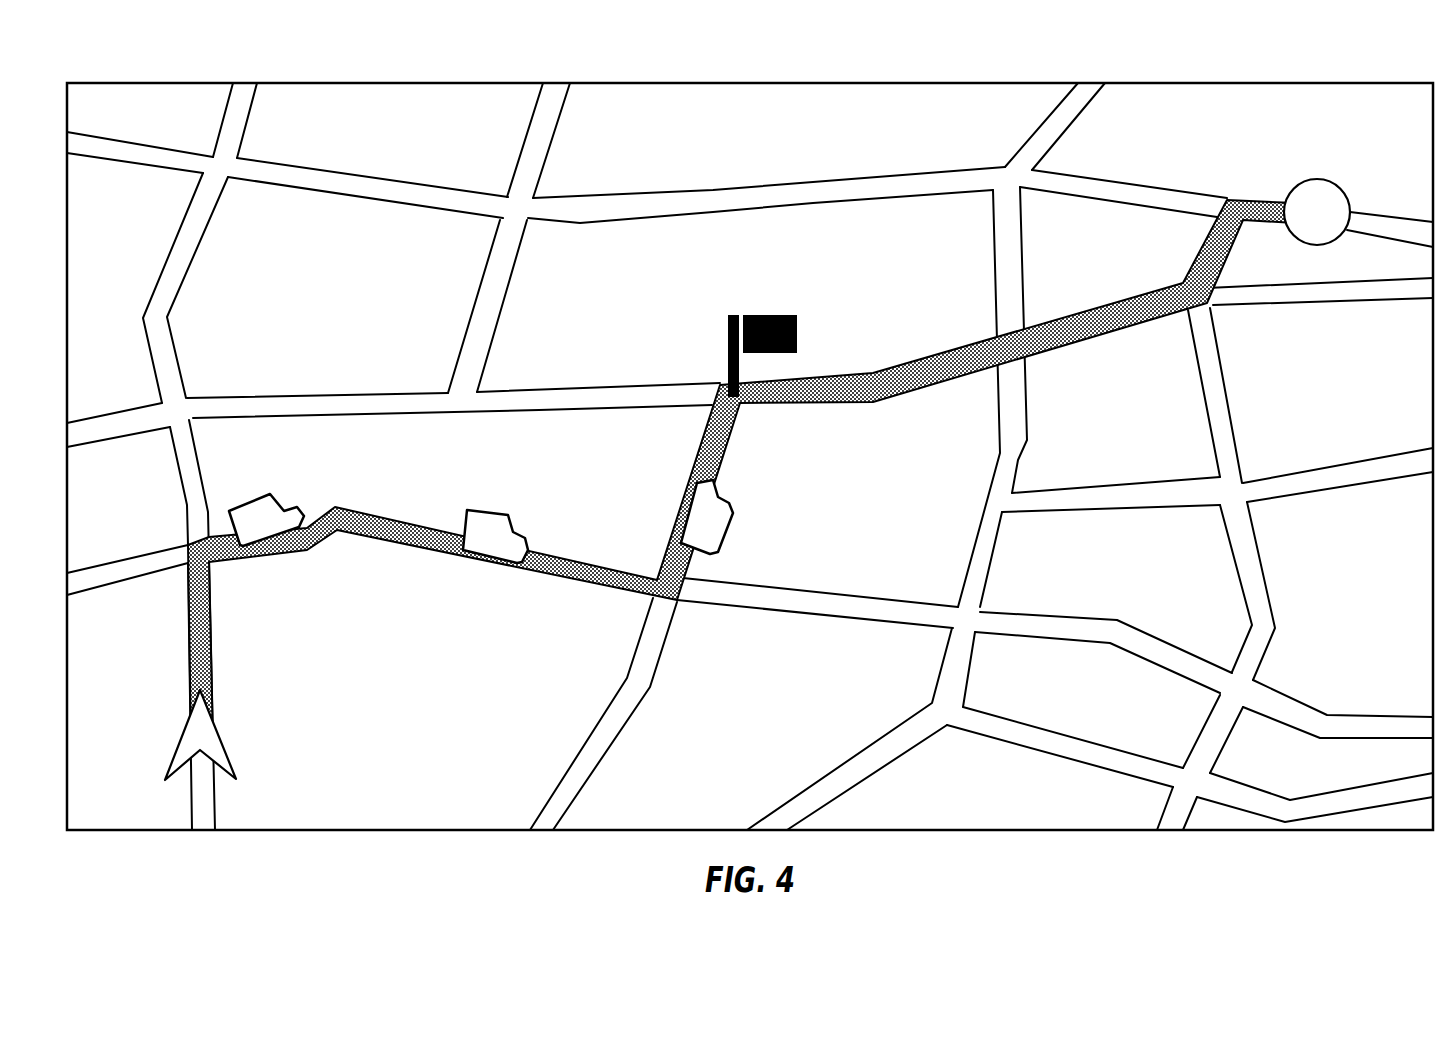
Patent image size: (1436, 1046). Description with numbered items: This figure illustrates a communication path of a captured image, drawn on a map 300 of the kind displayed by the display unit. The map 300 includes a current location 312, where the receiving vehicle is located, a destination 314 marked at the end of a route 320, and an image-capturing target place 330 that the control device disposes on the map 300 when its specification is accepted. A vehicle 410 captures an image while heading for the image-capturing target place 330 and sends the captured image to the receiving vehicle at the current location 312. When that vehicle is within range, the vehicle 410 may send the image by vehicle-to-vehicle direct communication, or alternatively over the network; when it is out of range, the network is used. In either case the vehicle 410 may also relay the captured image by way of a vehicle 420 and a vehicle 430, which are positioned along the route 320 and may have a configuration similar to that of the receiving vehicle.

The map 300 is at (887, 113).
The current location 312 is at (225, 743).
The destination 314 is at (1340, 184).
The route 320 is at (386, 517).
The image-capturing target place 330 is at (760, 315).
The vehicle 410 is at (734, 506).
The vehicle 420 is at (493, 508).
The vehicle 430 is at (272, 495).